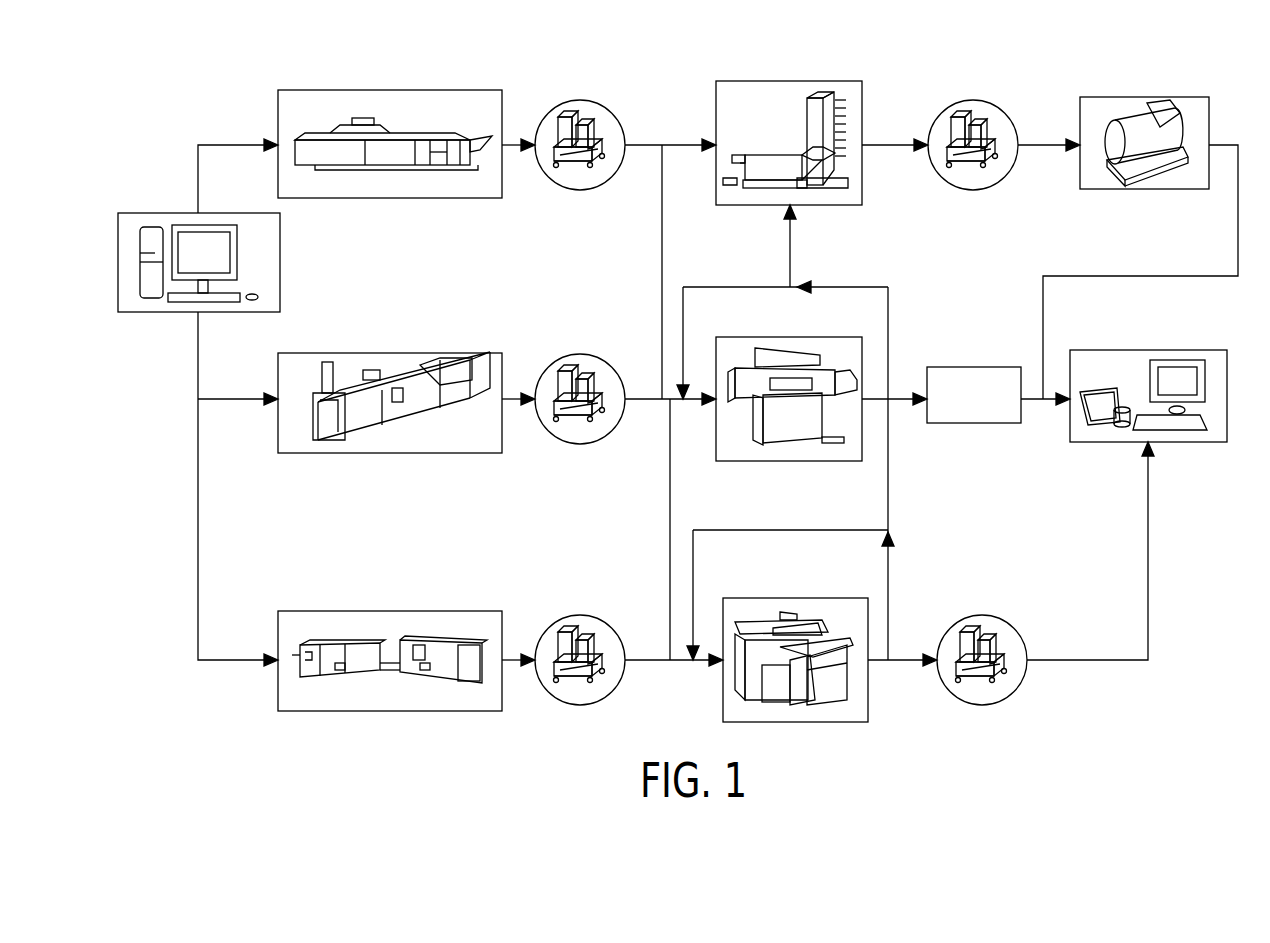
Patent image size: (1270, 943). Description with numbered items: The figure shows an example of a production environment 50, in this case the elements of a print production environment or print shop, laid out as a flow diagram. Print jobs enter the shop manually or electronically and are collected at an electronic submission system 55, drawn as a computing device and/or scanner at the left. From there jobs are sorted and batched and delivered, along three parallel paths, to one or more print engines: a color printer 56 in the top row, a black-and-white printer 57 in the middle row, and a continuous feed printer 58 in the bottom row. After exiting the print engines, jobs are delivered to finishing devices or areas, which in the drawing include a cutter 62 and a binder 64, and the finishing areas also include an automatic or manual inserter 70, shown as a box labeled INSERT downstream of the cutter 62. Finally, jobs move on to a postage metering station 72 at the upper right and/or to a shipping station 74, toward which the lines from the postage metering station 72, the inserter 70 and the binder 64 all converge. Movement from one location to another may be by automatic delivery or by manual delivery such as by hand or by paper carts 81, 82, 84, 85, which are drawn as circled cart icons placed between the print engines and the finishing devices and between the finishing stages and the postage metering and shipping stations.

The production environment 50 is at (200, 118).
The electronic submission system 55 is at (163, 313).
The color printer 56 is at (395, 199).
The black-and-white printer 57 is at (395, 453).
The continuous feed printer 58 is at (390, 711).
The paper cart 81 is at (582, 190).
The paper cart 82 is at (582, 444).
The paper cart 84 is at (973, 190).
The paper cart 85 is at (985, 705).
The cutter 62 is at (793, 462).
The binder 64 is at (840, 722).
The postage metering station 72 is at (1155, 190).
The inserter 70 is at (970, 424).
The shipping station 74 is at (1193, 443).